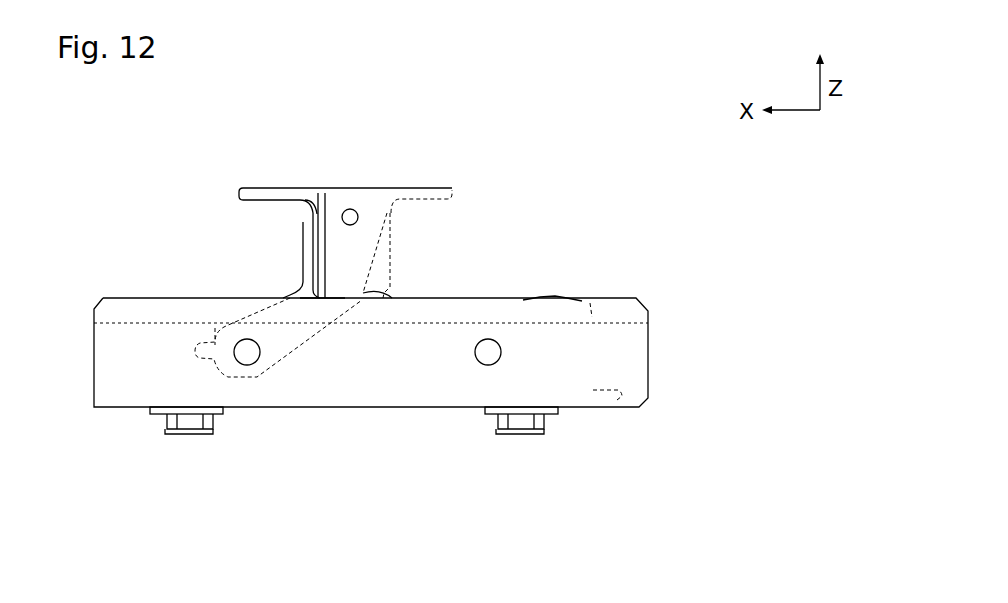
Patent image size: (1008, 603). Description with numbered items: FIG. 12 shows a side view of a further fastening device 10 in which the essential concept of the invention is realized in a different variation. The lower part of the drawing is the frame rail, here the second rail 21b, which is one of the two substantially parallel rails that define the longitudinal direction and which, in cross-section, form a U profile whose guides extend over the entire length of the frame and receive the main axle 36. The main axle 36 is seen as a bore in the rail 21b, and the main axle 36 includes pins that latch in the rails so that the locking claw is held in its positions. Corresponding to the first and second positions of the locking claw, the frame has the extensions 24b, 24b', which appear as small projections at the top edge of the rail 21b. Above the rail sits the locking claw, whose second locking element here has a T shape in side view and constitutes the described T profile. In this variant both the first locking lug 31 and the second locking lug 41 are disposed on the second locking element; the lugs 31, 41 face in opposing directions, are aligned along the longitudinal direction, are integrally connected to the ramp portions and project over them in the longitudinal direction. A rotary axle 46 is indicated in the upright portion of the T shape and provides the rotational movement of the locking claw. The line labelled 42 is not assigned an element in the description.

The fastening device 10 is at (144, 183).
The second rail 21b is at (280, 379).
The extension 24b is at (322, 415).
The extension 24b' is at (578, 435).
The first locking lug 31 is at (390, 186).
The main axle 36 is at (244, 358).
The second locking lug 41 is at (262, 190).
The gusset 42 is at (383, 255).
The rotary axle 46 is at (349, 219).